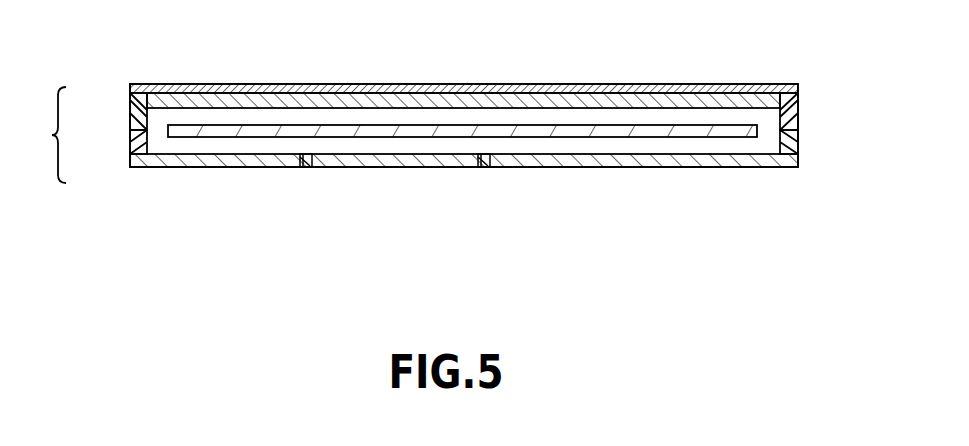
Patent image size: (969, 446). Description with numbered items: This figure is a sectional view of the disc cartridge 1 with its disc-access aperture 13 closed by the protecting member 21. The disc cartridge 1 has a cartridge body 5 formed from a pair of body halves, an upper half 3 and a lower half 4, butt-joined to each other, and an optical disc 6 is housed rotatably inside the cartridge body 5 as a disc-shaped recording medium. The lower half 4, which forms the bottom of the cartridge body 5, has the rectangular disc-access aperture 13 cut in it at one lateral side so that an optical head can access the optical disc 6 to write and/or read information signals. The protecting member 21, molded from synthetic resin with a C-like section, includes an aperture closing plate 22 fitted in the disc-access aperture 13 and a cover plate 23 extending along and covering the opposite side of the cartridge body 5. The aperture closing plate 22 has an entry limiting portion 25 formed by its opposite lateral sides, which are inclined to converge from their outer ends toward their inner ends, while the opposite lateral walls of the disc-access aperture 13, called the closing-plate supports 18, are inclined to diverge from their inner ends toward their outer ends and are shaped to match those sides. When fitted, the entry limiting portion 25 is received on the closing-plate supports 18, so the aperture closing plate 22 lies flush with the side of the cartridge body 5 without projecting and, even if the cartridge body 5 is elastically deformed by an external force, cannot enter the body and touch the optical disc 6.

The disc cartridge 1 is at (787, 113).
The upper half 3 is at (140, 110).
The lower half 4 is at (140, 157).
The cartridge body 5 is at (27, 152).
The optical disc 6 is at (660, 132).
The disc-access aperture 13 is at (313, 168).
The closing-plate supports 18 is at (313, 153).
The protecting member 21 is at (392, 84).
The aperture closing plate 22 is at (393, 163).
The cover plate 23 is at (598, 84).
The entry limiting portion 25 is at (488, 168).